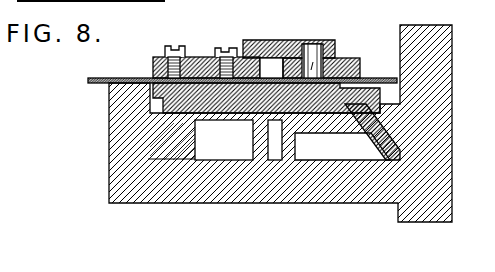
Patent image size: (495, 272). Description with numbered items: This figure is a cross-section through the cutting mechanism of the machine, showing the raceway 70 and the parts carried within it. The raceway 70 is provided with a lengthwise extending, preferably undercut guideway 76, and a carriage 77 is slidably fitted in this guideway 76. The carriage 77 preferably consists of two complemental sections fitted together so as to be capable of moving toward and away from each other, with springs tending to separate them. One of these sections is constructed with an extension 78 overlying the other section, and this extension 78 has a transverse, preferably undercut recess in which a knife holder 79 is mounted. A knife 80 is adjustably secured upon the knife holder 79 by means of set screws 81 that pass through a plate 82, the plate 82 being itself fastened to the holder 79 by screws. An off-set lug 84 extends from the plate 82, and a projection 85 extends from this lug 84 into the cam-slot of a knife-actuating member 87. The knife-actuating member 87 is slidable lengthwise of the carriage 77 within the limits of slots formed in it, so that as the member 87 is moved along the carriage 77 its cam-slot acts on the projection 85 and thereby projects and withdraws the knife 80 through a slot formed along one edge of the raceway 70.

The raceway 70 is at (444, 176).
The guideway 76 is at (390, 138).
The carriage 77 is at (168, 141).
The extension 78 is at (218, 121).
The knife holder 79 is at (366, 86).
The knife 80 is at (97, 84).
The set screws 81 is at (223, 50).
The plate 82 is at (151, 64).
The off-set lug 84 is at (280, 42).
The projection 85 is at (325, 46).
The knife-actuating member 87 is at (341, 65).